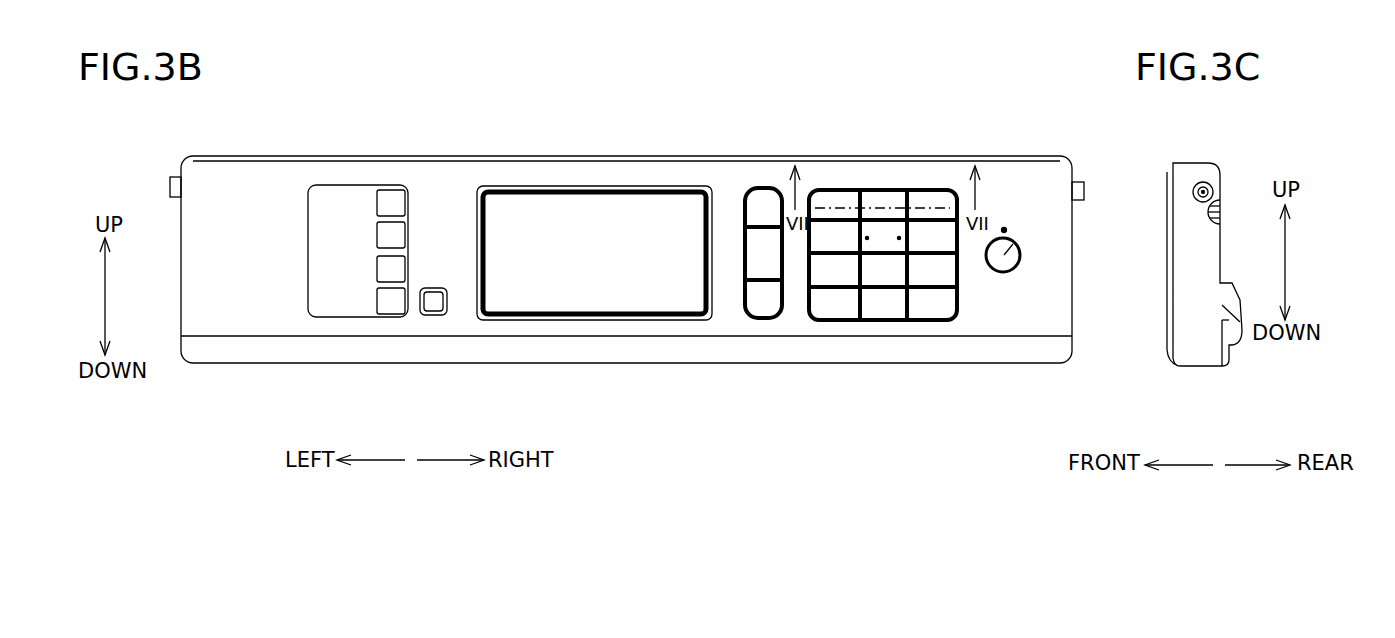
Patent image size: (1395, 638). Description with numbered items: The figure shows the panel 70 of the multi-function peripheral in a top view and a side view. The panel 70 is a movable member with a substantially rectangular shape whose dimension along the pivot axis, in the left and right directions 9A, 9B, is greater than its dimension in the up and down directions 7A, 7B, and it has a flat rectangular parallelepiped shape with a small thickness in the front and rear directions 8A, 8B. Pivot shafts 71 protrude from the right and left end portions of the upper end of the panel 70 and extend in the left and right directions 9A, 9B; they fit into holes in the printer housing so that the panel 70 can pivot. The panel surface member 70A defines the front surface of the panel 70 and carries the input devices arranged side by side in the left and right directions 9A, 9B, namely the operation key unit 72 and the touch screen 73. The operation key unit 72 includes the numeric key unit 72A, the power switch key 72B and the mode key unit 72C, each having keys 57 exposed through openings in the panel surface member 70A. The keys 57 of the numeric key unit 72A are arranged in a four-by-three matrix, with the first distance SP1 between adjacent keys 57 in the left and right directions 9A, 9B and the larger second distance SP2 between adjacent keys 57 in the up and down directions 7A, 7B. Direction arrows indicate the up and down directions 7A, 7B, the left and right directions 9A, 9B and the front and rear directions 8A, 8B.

In FIG. 3B, the panel 70 is at (640, 148).
In FIG. 3C, the panel 70 is at (1222, 160).
In FIG. 3B, the panel surface member 70A is at (998, 203).
In FIG. 3B, the pivot shaft 71 is at (170, 187).
In FIG. 3C, the pivot shaft 71 is at (1200, 184).
In FIG. 3B, the operation key unit 72 is at (883, 263).
In FIG. 3B, the numeric key unit 72A is at (877, 186).
In FIG. 3B, the power switch key 72B is at (1027, 254).
In FIG. 3B, the mode key unit 72C is at (762, 185).
In FIG. 3B, the touch screen 73 is at (595, 320).
In FIG. 3B, the key 57 is at (936, 263).
In FIG. 3B, the first distance SP1 is at (908, 190).
In FIG. 3B, the second distance SP2 is at (960, 288).
In FIG. 3B, the up direction 7A is at (108, 276).
In FIG. 3C, the up direction 7A is at (1288, 240).
In FIG. 3B, the down direction 7B is at (108, 324).
In FIG. 3C, the down direction 7B is at (1288, 294).
In FIG. 3B, the left direction 9A is at (377, 458).
In FIG. 3B, the right direction 9B is at (442, 458).
In FIG. 3C, the front direction 8A is at (1184, 462).
In FIG. 3C, the rear direction 8B is at (1250, 462).